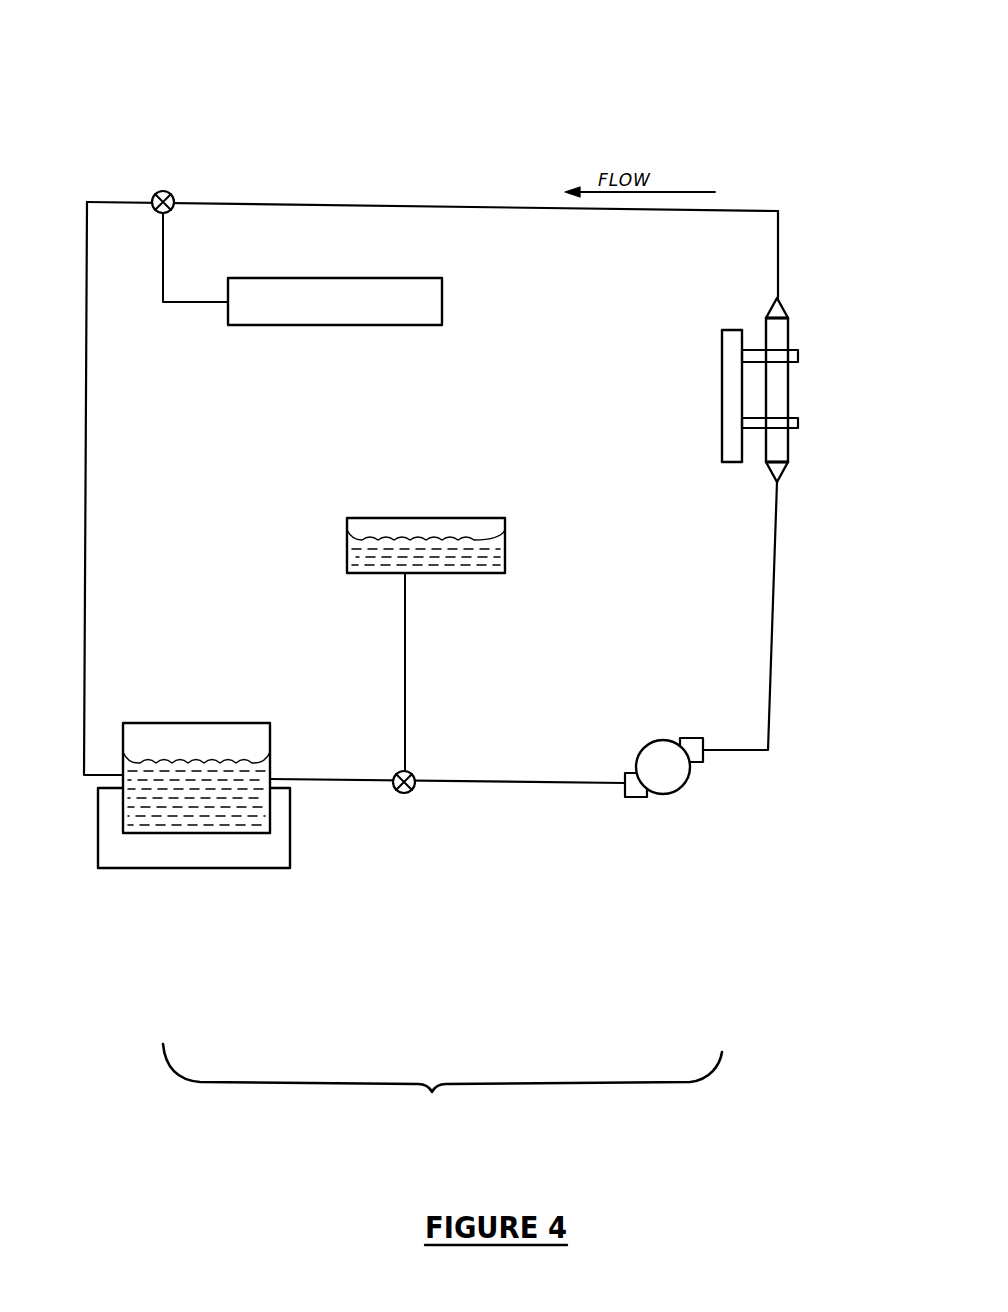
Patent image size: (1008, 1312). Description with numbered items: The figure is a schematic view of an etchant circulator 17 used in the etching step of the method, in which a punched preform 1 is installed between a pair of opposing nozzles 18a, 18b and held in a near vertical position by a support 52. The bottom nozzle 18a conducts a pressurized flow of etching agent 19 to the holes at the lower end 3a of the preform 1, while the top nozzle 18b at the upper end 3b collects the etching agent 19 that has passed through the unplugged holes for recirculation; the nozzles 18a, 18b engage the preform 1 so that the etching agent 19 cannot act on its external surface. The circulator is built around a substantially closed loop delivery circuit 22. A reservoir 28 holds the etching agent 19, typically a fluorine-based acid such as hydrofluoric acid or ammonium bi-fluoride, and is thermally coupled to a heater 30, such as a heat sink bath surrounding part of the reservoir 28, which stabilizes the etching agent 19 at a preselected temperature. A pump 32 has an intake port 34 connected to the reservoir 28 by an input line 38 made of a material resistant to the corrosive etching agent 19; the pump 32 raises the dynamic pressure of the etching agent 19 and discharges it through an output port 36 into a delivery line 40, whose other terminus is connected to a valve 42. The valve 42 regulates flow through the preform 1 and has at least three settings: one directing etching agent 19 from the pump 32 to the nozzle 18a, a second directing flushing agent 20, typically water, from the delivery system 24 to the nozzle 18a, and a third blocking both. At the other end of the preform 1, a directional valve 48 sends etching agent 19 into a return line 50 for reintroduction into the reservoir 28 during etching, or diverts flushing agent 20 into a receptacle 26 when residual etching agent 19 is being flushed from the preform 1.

The etchant circulator 17 is at (506, 108).
The directional valve 48 is at (175, 203).
The receptacle 26 is at (335, 301).
The return line 50 is at (548, 211).
The end of preform 3b is at (765, 323).
The top nozzle 18b is at (788, 306).
The preform 1 is at (763, 393).
The support 52 is at (722, 390).
The bottom nozzle 18a is at (788, 474).
The end of preform 3a is at (765, 462).
The flushing agent 20 is at (505, 546).
The delivery system for flushing agent 24 is at (445, 575).
The delivery line 40 is at (768, 580).
The reservoir 28 is at (225, 731).
The etching agent 19 is at (259, 779).
The output port 36 is at (689, 740).
The input line 38 is at (320, 783).
The valve 42 is at (416, 782).
The intake port 34 is at (634, 798).
The pump 32 is at (653, 774).
The heater 30 is at (192, 868).
The delivery circuit 22 is at (442, 1083).